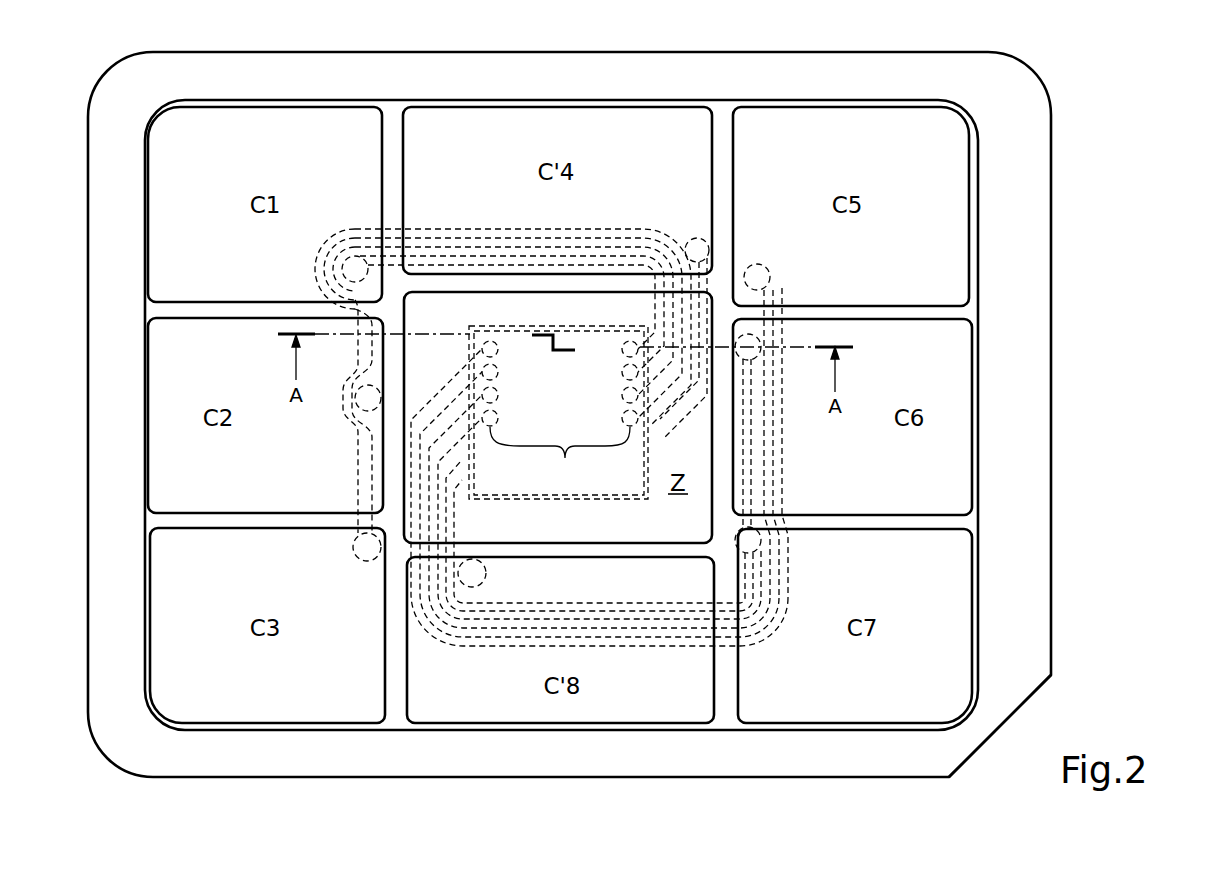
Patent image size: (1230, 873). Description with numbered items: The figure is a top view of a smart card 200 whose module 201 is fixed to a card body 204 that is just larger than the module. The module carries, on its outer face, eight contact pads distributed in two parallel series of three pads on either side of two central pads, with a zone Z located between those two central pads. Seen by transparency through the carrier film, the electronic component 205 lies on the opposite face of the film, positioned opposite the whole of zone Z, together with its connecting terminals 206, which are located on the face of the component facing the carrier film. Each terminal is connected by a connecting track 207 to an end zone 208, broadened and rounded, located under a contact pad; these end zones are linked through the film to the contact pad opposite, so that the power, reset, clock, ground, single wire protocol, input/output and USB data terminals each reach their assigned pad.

The smart card 200 is at (1080, 53).
The module 201 is at (979, 289).
The card body 204 is at (1022, 573).
The electronic component 205 is at (565, 506).
The connecting terminals 206 is at (560, 461).
The connecting tracks 207 is at (620, 605).
The end zones 208 is at (751, 334).